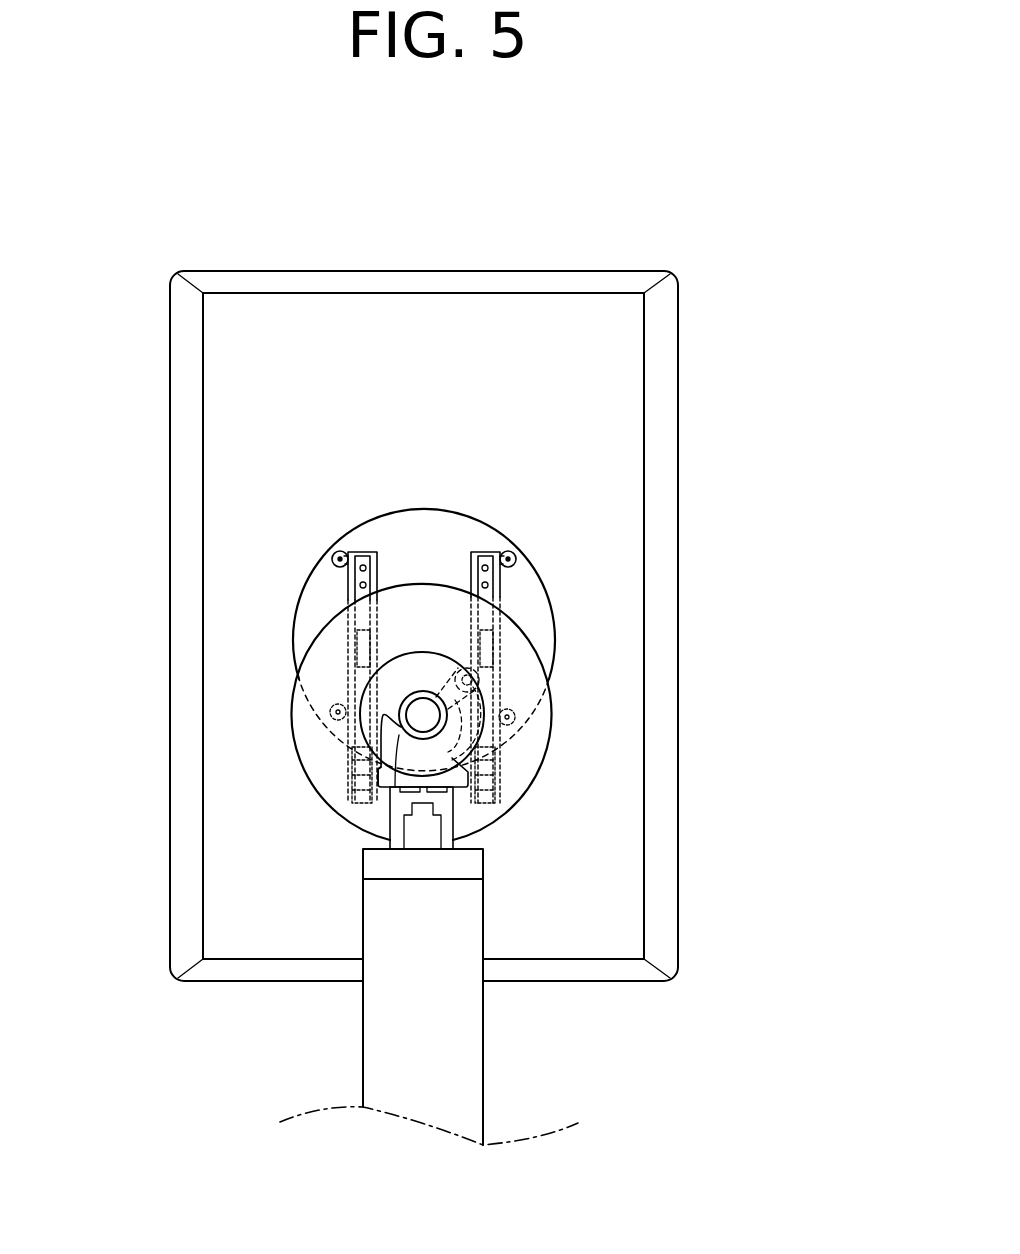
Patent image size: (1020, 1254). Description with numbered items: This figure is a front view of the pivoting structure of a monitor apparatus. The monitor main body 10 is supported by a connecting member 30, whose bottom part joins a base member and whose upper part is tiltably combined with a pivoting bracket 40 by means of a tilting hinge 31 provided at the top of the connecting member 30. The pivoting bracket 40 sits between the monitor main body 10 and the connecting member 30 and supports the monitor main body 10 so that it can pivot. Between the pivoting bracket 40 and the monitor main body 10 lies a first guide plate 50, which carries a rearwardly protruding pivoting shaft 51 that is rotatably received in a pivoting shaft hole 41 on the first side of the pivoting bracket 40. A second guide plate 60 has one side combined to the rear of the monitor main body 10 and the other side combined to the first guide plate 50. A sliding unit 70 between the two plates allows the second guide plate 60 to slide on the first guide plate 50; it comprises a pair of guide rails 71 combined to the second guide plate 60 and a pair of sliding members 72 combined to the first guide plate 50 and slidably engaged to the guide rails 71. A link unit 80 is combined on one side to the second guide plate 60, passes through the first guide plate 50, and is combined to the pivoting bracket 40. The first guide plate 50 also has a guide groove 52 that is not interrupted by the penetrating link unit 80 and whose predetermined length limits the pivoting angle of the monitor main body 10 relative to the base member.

The monitor main body 10 is at (681, 385).
The connecting member 30 is at (488, 1047).
The tilting hinge 31 is at (447, 807).
The pivoting bracket 40 is at (467, 773).
The pivoting shaft hole 41 is at (392, 790).
The first guide plate 50 is at (543, 793).
The pivoting shaft 51 is at (380, 777).
The guide groove 52 is at (483, 735).
The second guide plate 60 is at (547, 585).
The sliding unit 70 is at (90, 593).
The guide rail 71 is at (343, 580).
The sliding member 72 is at (357, 768).
The link unit 80 is at (445, 681).